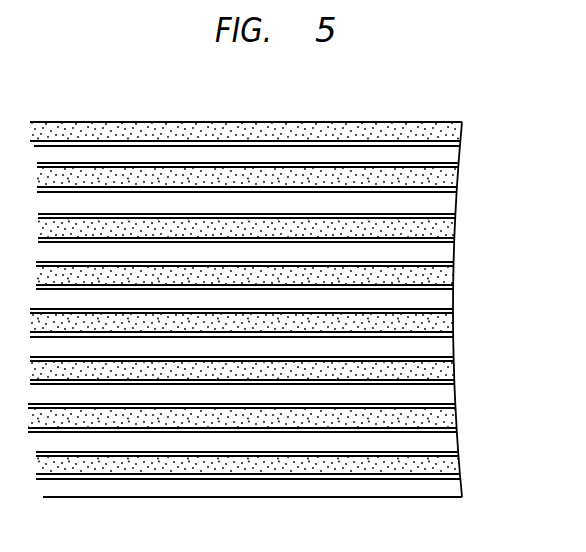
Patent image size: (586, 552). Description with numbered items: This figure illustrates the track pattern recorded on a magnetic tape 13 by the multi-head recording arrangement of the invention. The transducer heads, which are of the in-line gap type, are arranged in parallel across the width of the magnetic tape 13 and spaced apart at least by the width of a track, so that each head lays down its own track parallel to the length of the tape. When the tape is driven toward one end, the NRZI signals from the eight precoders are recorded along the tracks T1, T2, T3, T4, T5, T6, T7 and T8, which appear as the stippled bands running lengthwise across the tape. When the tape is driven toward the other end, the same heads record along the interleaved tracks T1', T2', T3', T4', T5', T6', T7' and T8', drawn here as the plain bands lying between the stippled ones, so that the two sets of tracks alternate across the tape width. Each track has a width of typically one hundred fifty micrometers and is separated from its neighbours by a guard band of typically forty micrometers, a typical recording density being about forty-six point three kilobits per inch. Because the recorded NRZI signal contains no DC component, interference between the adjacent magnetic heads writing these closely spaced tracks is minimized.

The magnetic tape 13 is at (86, 122).
The track T8 is at (266, 132).
The track T8' is at (270, 153).
The track T7 is at (269, 174).
The track T7' is at (272, 198).
The track T6 is at (270, 222).
The track T6' is at (271, 245).
The track T5 is at (269, 268).
The track T5' is at (268, 293).
The track T4 is at (266, 318).
The track T4' is at (268, 342).
The track T3 is at (266, 366).
The track T3' is at (267, 390).
The track T2 is at (265, 414).
The track T2' is at (267, 438).
The track T1 is at (269, 461).
The track T1' is at (271, 487).